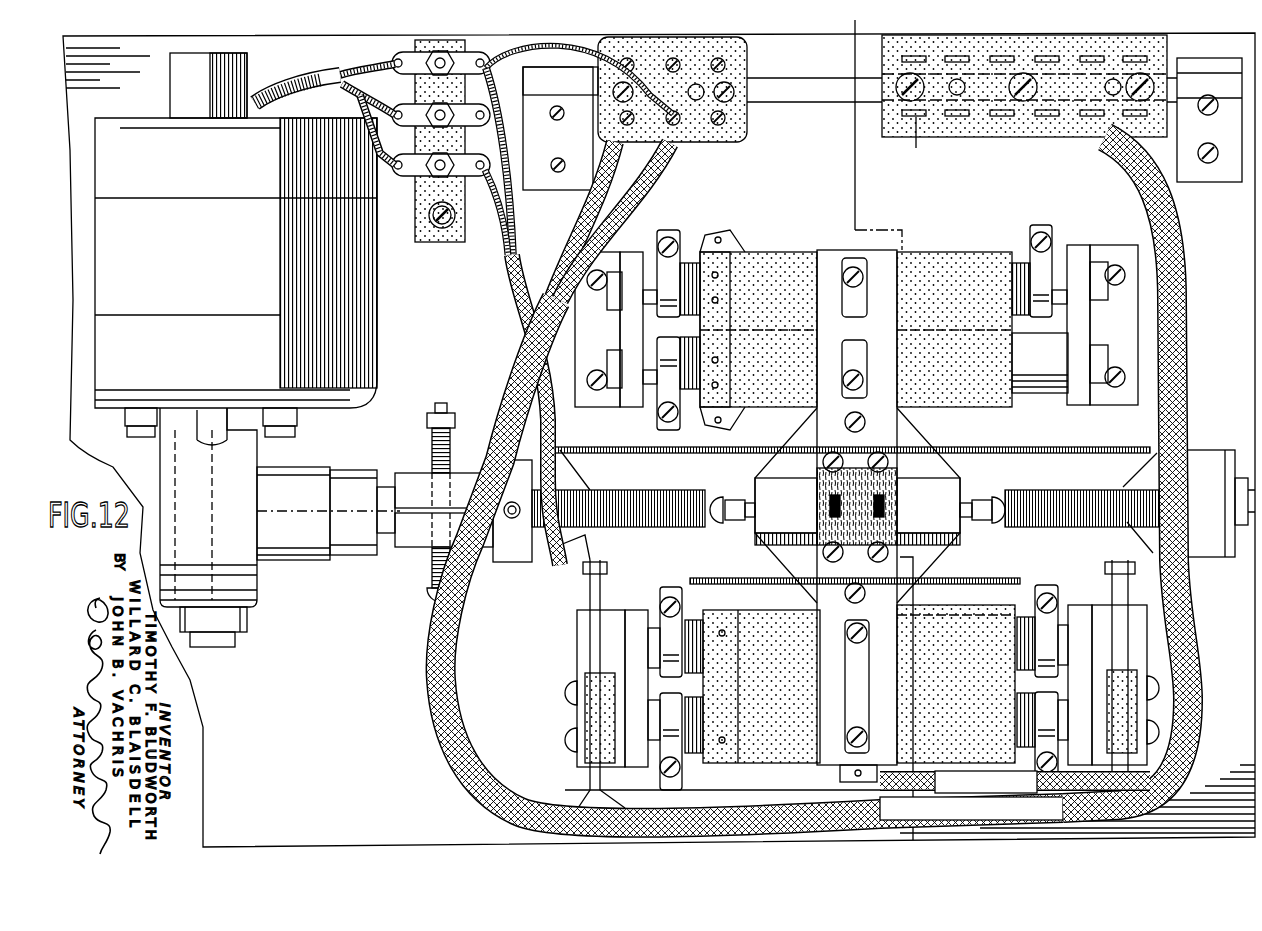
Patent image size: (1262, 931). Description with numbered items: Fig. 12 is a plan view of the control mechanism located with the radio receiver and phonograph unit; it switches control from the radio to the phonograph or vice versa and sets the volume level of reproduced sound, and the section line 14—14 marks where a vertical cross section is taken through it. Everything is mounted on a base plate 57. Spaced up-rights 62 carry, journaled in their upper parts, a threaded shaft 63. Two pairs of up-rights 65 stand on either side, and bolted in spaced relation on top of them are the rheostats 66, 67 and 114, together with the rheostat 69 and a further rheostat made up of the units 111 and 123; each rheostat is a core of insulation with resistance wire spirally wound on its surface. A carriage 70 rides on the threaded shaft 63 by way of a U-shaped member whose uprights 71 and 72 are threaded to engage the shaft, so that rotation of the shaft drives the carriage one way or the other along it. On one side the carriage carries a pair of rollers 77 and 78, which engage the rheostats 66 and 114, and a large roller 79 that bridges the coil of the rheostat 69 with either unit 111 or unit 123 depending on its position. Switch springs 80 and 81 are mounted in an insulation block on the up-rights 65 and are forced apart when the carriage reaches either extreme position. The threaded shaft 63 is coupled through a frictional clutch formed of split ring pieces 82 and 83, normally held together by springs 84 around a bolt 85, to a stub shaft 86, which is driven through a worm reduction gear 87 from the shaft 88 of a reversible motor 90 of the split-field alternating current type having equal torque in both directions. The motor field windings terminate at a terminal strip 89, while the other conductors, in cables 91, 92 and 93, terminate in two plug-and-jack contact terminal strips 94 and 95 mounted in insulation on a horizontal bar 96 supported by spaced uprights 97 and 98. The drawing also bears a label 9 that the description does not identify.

The panel 9 is at (915, 141).
The section line 14 is at (865, 432).
The base plate 57 is at (1231, 458).
The spaced up-rights 62 is at (512, 562).
The threaded shaft 63 is at (625, 252).
The up-rights 65 is at (640, 610).
The rheostat 66 is at (688, 258).
The rheostat 67 is at (1040, 395).
The rheostat 69 is at (702, 712).
The carriage 70 is at (880, 507).
The upright 71 is at (786, 505).
The upright 72 is at (928, 505).
The roller 77 is at (863, 270).
The roller 78 is at (861, 360).
The large roller 79 is at (862, 660).
The switch spring 80 is at (588, 595).
The switch spring 81 is at (603, 600).
The split ring piece 82 is at (410, 549).
The split ring piece 83 is at (405, 478).
The springs 84 is at (420, 590).
The bolt 85 is at (437, 410).
The stub shaft 86 is at (386, 495).
The worm reduction gear 87 is at (240, 565).
The shaft 88 is at (230, 45).
The terminal strip 89 is at (428, 243).
The reversible motor 90 is at (370, 357).
The cable 91 is at (430, 667).
The cable 92 is at (557, 430).
The cable 93 is at (1170, 218).
The contact terminal strip 94 is at (748, 128).
The contact terminal strip 95 is at (890, 138).
The horizontal bar 96 is at (962, 90).
The upright 97 is at (1209, 120).
The upright 98 is at (560, 128).
The rheostat unit 111 is at (688, 618).
The rheostat 114 is at (700, 410).
The rheostat unit 123 is at (1025, 612).